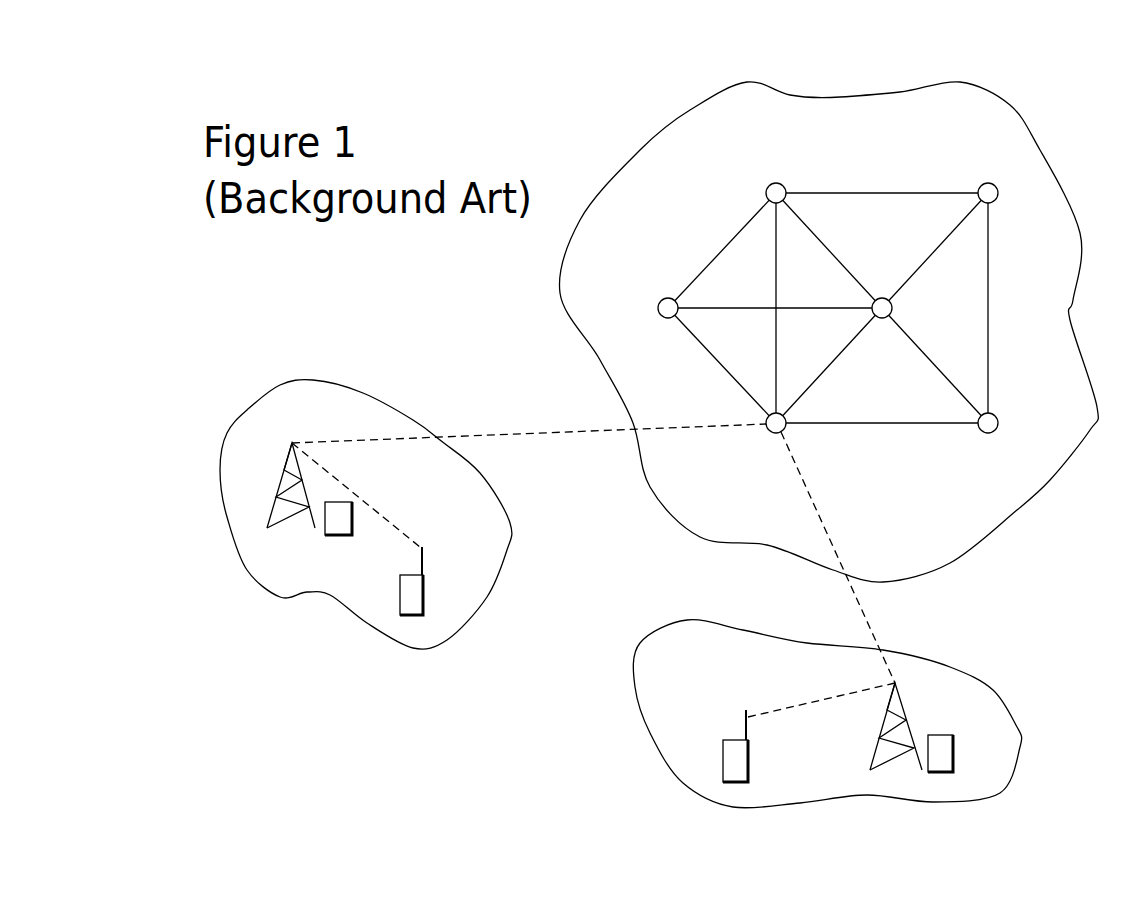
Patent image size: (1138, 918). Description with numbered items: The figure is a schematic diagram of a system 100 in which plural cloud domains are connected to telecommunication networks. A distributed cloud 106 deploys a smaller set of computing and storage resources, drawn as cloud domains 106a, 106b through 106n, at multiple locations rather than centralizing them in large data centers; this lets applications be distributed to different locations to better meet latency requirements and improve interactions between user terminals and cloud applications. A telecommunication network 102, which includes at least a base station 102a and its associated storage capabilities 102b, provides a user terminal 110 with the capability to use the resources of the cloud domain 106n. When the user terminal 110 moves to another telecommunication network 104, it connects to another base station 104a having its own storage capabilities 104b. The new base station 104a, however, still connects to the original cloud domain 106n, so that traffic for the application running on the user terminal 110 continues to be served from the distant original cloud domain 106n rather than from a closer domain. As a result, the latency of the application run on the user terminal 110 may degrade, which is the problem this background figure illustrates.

The system 100 is at (800, 31).
The telecommunication network 102 is at (1002, 700).
The base station 102a is at (893, 773).
The storage capabilities 102b is at (953, 763).
The telecommunication network 104 is at (280, 383).
The base station 104a is at (285, 530).
The storage capabilities 104b is at (340, 537).
The distributed cloud 106 is at (947, 82).
The cloud domain 106a is at (770, 187).
The cloud domain 106b is at (980, 187).
The cloud domain 106n is at (785, 430).
The user terminal 110 is at (415, 615).